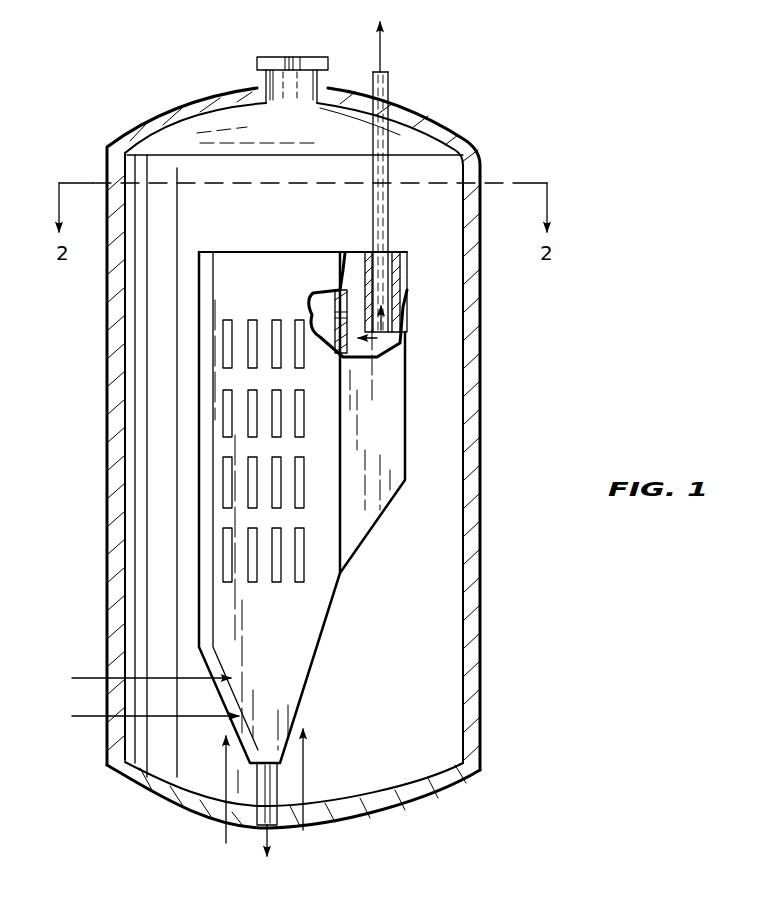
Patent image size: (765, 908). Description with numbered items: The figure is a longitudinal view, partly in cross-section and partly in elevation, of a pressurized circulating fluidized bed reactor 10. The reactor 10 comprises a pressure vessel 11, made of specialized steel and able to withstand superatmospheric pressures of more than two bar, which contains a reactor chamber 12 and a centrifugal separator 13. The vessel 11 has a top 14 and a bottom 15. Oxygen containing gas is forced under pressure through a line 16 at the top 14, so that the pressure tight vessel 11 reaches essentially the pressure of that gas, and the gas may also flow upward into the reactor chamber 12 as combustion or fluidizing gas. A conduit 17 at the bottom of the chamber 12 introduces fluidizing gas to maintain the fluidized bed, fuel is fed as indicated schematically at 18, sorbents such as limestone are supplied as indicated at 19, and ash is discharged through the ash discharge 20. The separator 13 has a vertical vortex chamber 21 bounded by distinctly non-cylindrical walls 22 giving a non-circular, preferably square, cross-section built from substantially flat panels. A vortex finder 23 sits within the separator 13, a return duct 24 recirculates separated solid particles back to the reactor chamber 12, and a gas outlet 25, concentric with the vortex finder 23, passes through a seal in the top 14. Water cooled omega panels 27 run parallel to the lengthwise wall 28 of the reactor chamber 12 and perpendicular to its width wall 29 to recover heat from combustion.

The pressurized circulating fluidized bed reactor 10 is at (516, 86).
The pressure vessel 11 is at (470, 405).
The reactor chamber 12 is at (210, 327).
The centrifugal separator 13 is at (421, 440).
The top 14 is at (187, 112).
The bottom 15 is at (147, 785).
The line 16 is at (293, 56).
The conduit 17 is at (233, 833).
The means for feeding fuel 18 is at (148, 680).
The means for providing other materials 19 is at (127, 712).
The ash discharge 20 is at (290, 832).
The vortex chamber 21 is at (400, 290).
The non-cylindrical walls 22 is at (399, 372).
The vortex finder 23 is at (387, 282).
The return duct 24 is at (355, 514).
The gas outlet 25 is at (389, 95).
The omega panels 27 is at (222, 477).
The lengthwise wall 28 is at (199, 305).
The width wall 29 is at (262, 280).